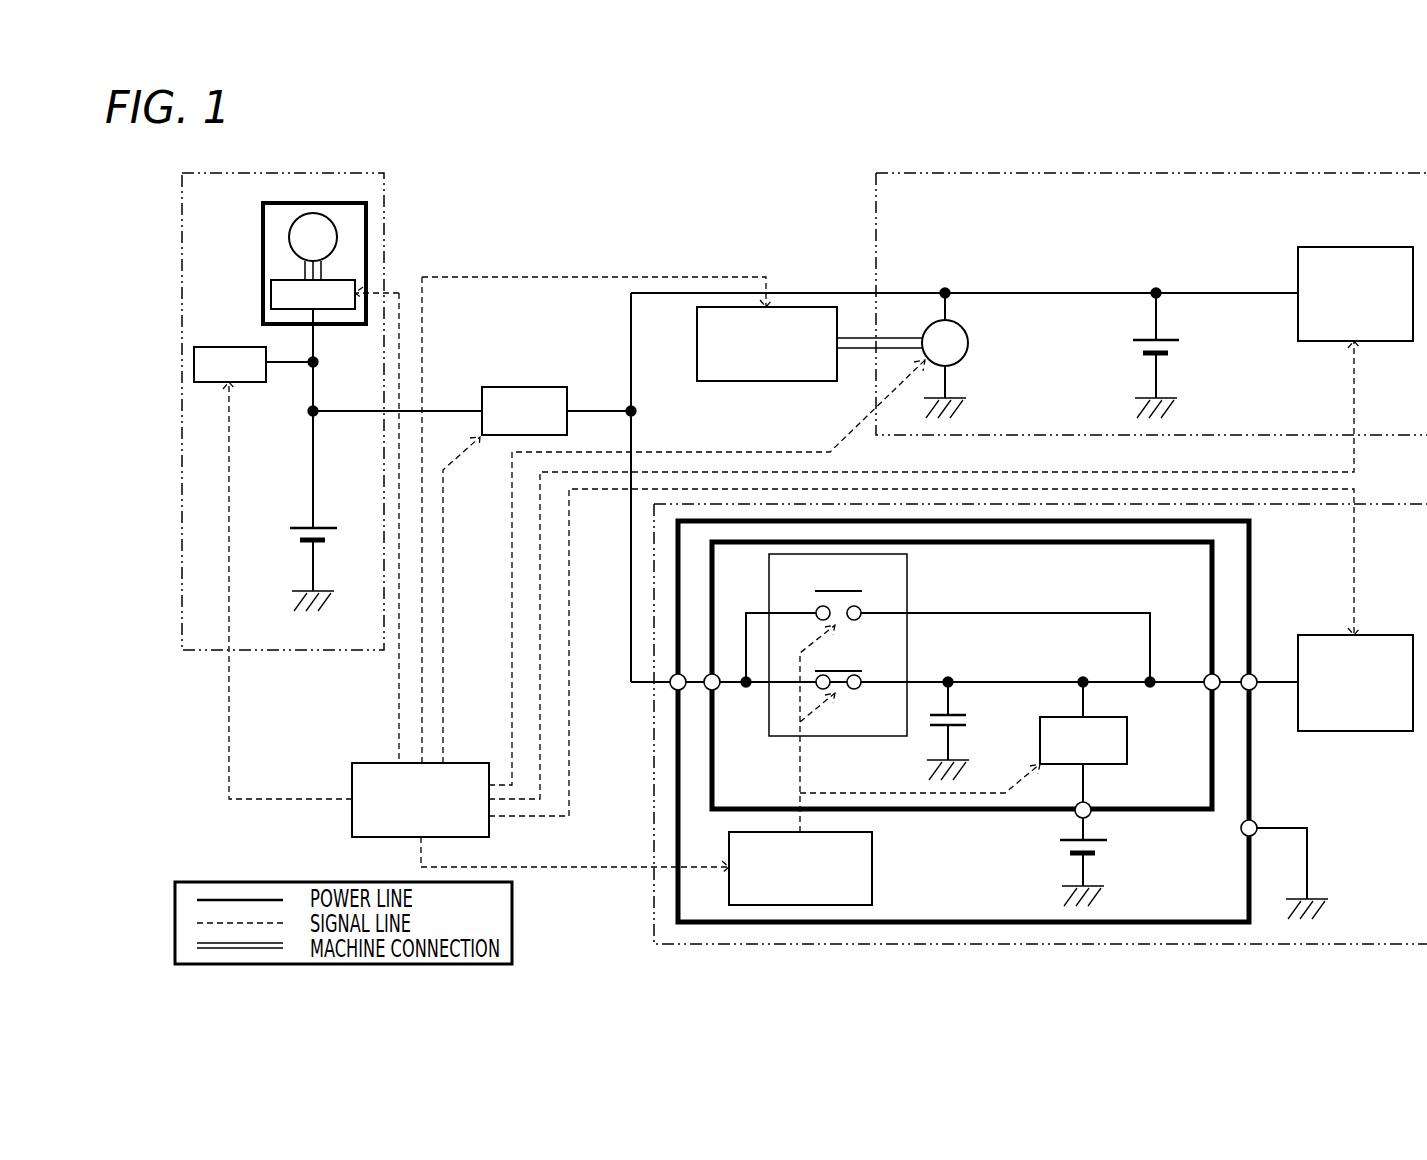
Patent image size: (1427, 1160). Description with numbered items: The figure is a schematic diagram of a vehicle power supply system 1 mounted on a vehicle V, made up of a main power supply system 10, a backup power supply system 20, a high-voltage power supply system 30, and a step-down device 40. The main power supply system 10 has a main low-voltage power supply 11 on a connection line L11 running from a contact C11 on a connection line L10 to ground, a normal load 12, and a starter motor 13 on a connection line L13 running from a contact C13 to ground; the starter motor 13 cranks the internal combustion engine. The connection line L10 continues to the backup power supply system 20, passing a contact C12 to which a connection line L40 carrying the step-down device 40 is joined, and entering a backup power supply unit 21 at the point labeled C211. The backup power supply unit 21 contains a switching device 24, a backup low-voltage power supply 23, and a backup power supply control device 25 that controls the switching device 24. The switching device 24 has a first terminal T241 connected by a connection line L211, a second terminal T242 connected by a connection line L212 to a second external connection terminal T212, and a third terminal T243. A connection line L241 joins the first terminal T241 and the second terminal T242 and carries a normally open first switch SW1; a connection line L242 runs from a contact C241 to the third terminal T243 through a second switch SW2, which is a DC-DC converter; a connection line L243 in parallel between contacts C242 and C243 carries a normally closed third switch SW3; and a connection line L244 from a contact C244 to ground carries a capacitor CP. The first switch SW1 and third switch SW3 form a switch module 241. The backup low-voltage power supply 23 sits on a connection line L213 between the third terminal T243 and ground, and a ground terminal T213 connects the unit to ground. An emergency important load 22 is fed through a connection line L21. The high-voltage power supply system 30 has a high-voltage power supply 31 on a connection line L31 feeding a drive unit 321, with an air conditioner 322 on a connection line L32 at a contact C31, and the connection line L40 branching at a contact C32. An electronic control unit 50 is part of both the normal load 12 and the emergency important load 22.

The vehicle V is at (503, 128).
The vehicle power supply system 1 is at (596, 148).
The main power supply system 10 is at (1190, 173).
The main low-voltage power supply 11 is at (1170, 350).
The normal load 12 is at (1337, 247).
The starter motor 13 is at (968, 352).
The connection line L10 is at (862, 290).
The connection line L11 is at (1153, 322).
The connection line L13 is at (948, 318).
The contact C11 is at (1160, 290).
The contact C12 is at (636, 408).
The contact C13 is at (948, 290).
The backup power supply system 20 is at (654, 895).
The backup power supply unit 21 is at (1249, 538).
The emergency important load 22 is at (1343, 731).
The backup low-voltage power supply 23 is at (1093, 850).
The switching device 24 is at (975, 809).
The backup power supply control device 25 is at (872, 857).
The switch module 241 is at (907, 580).
The connection line L21 is at (1278, 684).
The connection line L211 is at (697, 680).
The connection line L212 is at (1227, 681).
The connection line L213 is at (1075, 822).
The connection line L241 is at (1005, 683).
The connection line L242 is at (1090, 705).
The connection line L243 is at (1000, 612).
The connection line L244 is at (950, 700).
The connection point C211 is at (674, 676).
The contact C241 is at (1083, 678).
The contact C242 is at (746, 688).
The contact C243 is at (1153, 688).
The contact C244 is at (948, 678).
The second external connection terminal T212 is at (1256, 676).
The ground terminal T213 is at (1255, 820).
The first terminal T241 is at (708, 690).
The second terminal T242 is at (1210, 674).
The third terminal T243 is at (1093, 804).
The first switch SW1 is at (842, 668).
The second switch SW2 is at (1127, 745).
The third switch SW3 is at (845, 590).
The capacitor CP is at (960, 720).
The high-voltage power supply system 30 is at (384, 173).
The high-voltage power supply 31 is at (298, 530).
The drive unit 321 is at (263, 220).
The air conditioner 322 is at (250, 380).
The connection line L31 is at (316, 375).
The connection line L32 is at (285, 356).
The contact C31 is at (318, 357).
The contact C32 is at (318, 416).
The step-down device 40 is at (522, 387).
The connection line L40 is at (465, 405).
The electronic control unit 50 is at (365, 763).